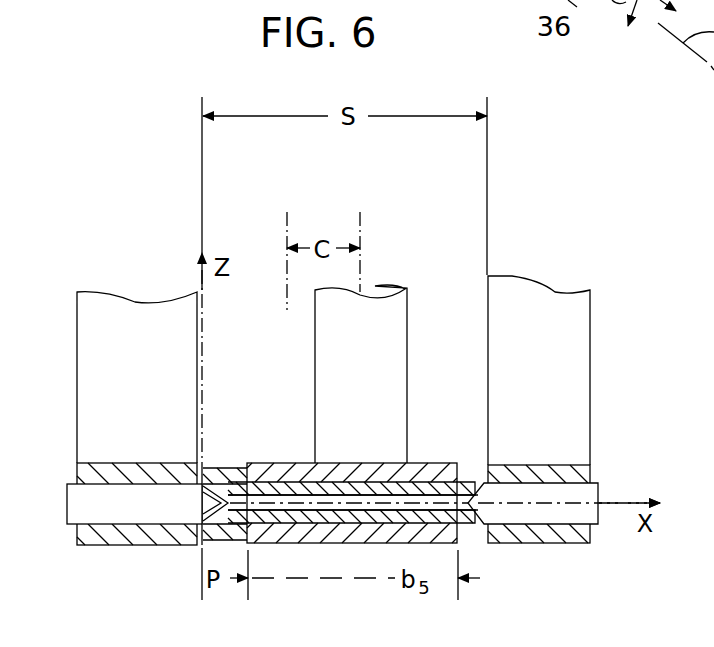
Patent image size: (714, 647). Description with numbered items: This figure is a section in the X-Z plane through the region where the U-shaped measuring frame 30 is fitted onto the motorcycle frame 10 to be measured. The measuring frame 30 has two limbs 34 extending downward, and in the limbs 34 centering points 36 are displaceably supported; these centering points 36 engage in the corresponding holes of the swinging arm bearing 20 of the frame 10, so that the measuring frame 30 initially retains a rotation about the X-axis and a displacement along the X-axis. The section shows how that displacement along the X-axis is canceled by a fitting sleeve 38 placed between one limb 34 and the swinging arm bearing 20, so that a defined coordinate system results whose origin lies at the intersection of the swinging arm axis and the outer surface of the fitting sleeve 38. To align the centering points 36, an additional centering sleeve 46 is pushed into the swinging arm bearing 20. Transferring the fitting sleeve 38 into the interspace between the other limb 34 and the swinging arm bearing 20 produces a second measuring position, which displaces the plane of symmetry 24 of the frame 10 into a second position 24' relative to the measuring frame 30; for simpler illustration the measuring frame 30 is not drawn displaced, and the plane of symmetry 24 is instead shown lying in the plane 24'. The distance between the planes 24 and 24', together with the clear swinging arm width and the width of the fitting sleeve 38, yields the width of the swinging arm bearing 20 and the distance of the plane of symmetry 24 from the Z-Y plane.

The motorcycle frame 10 is at (409, 386).
The swinging arm bearing 20 is at (378, 535).
The main plane of symmetry 24 is at (393, 239).
The second position of the plane of symmetry 24' is at (308, 240).
The measuring frame 30 is at (144, 288).
The limb 34 is at (572, 362).
The centering point 36 is at (95, 512).
The fitting sleeve 38 is at (227, 478).
The centering sleeve 46 is at (282, 490).